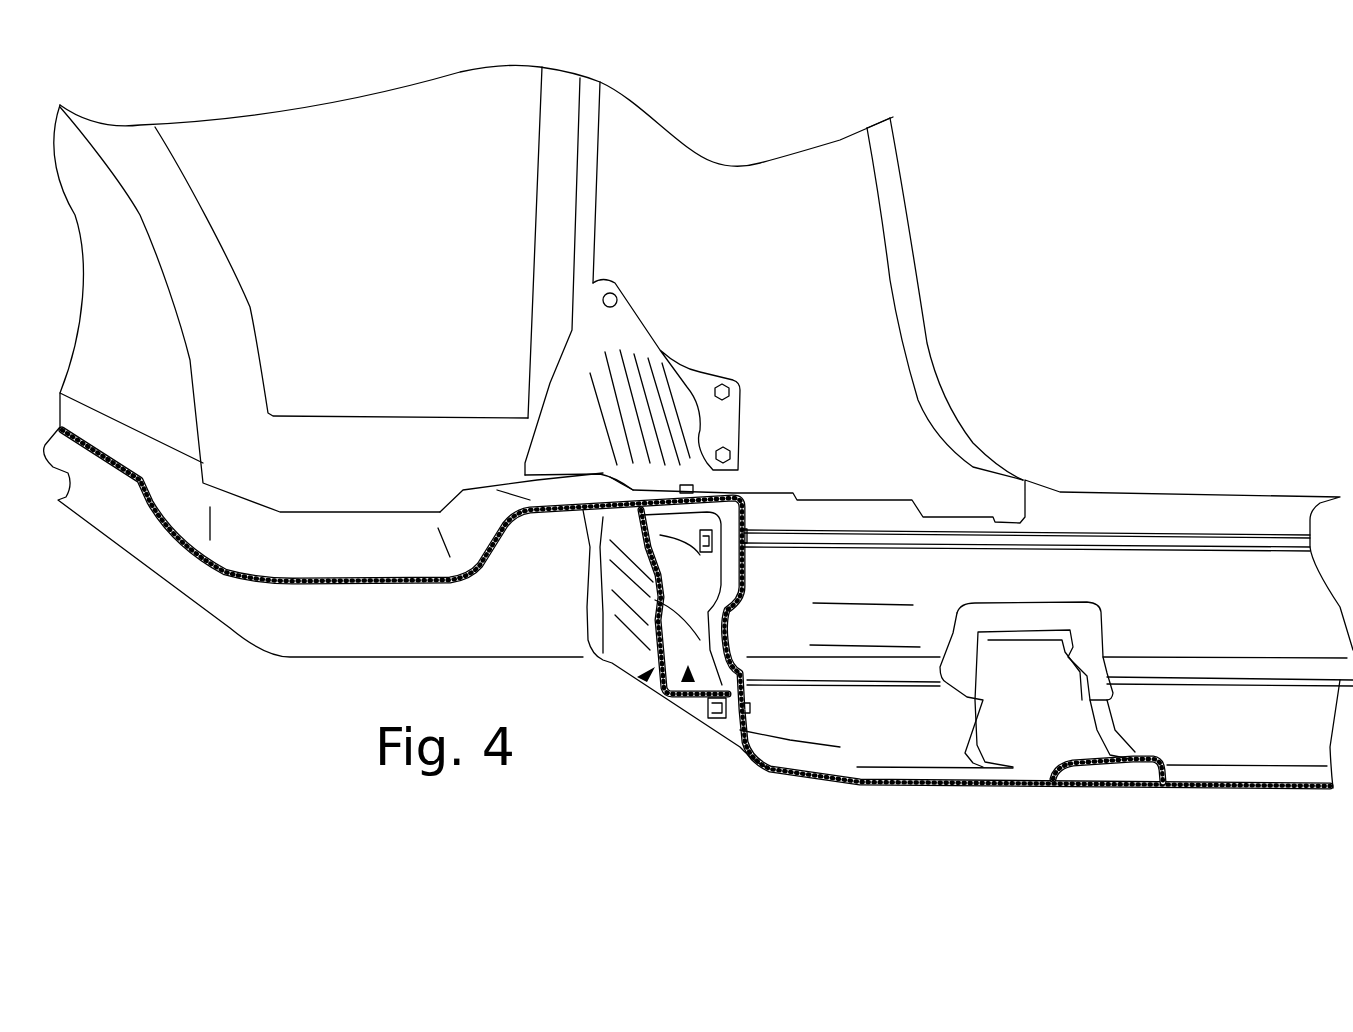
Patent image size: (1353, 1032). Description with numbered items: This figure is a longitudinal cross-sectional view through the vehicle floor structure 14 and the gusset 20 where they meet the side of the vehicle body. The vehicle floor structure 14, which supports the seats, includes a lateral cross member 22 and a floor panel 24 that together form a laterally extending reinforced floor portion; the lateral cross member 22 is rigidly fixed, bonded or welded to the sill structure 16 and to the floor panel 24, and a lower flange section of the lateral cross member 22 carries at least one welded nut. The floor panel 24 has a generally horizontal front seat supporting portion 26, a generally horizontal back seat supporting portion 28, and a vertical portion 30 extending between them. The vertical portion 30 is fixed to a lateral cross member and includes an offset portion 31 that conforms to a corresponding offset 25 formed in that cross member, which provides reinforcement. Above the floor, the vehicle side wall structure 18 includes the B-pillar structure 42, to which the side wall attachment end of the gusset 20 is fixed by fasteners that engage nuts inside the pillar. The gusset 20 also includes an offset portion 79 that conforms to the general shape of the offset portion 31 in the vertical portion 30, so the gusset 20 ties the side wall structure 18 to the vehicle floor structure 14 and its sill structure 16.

The vehicle floor structure 14 is at (697, 837).
The sill structure 16 is at (1200, 503).
The vehicle side wall structure 18 is at (925, 270).
The gusset 20 is at (665, 325).
The lateral cross member 22 is at (643, 673).
The floor panel 24 is at (762, 771).
The offset 25 is at (737, 597).
The front seat supporting portion 26 is at (1208, 777).
The back seat supporting portion 28 is at (493, 490).
The vertical portion 30 is at (840, 747).
The offset portion 31 is at (733, 630).
The B-pillar structure 42 is at (822, 238).
The offset portion 79 is at (748, 650).